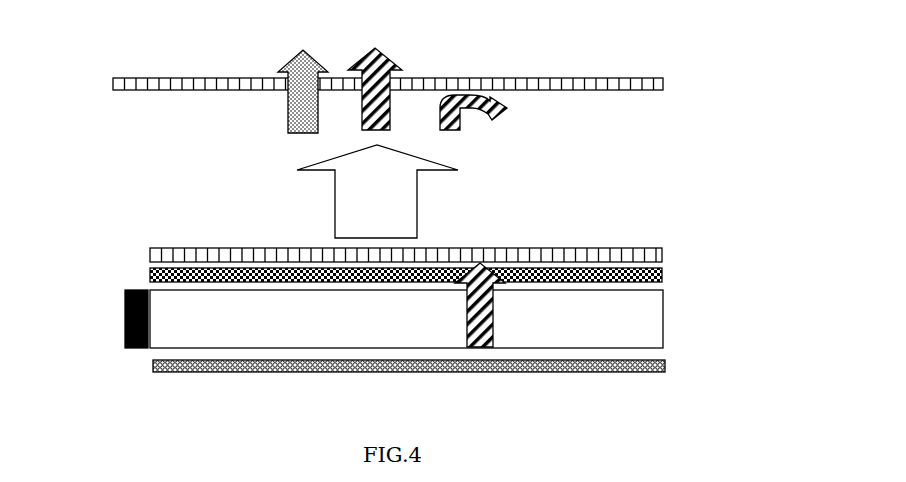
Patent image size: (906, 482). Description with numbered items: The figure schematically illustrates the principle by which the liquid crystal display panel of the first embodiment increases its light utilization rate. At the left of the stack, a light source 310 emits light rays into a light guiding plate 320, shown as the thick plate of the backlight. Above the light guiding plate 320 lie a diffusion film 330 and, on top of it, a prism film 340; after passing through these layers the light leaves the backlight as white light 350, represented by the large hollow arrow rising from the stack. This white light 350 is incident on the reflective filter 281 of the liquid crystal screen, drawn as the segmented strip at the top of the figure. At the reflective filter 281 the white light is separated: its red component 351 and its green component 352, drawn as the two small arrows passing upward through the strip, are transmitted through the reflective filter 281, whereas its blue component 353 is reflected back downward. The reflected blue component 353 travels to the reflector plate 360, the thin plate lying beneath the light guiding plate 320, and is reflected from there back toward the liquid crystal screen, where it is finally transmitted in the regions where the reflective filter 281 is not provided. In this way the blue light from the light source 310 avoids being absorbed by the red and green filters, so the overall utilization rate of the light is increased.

The reflective filter 281 is at (663, 83).
The red component 351 is at (295, 55).
The green component 352 is at (367, 48).
The blue component 353 is at (505, 109).
The white light 350 is at (415, 225).
The prism film 340 is at (660, 253).
The diffusion film 330 is at (660, 273).
The light guiding plate 320 is at (657, 328).
The light source 310 is at (125, 322).
The reflector plate 360 is at (155, 368).